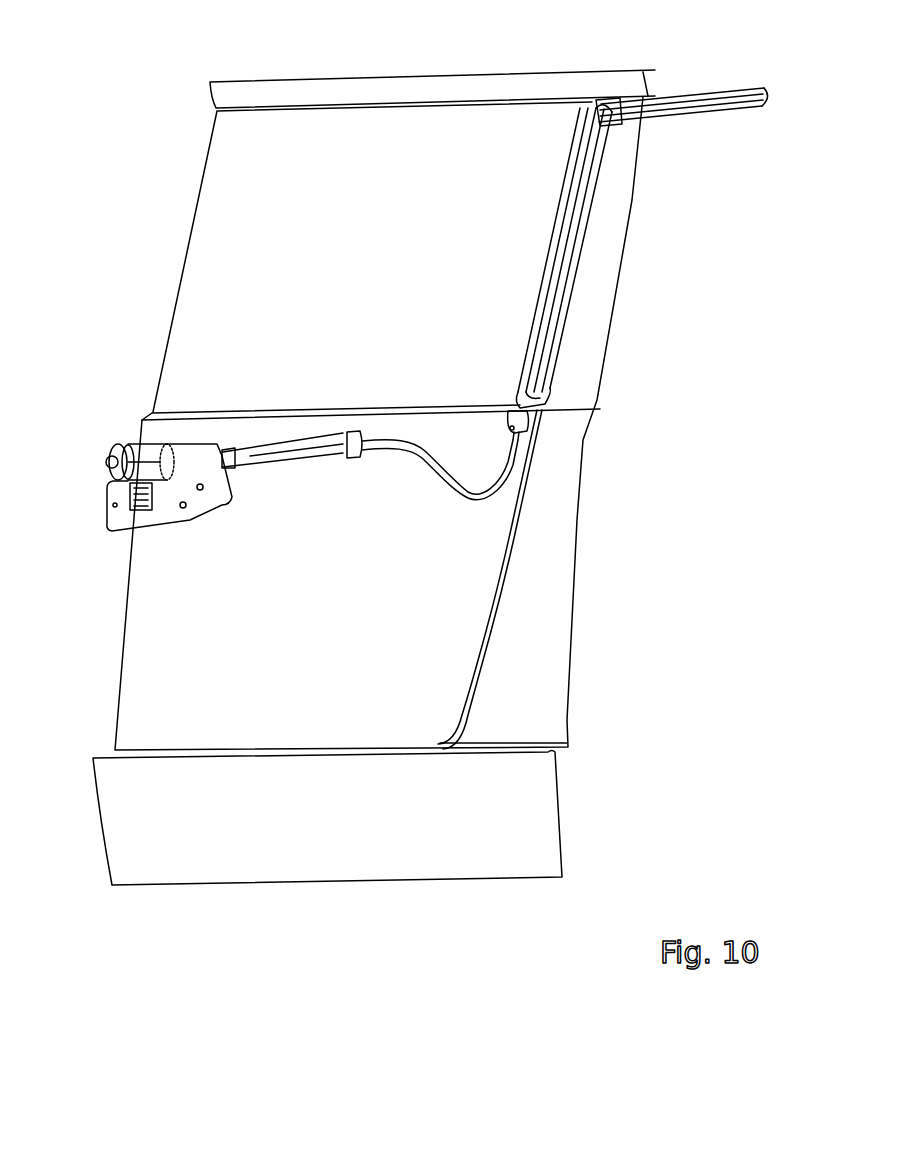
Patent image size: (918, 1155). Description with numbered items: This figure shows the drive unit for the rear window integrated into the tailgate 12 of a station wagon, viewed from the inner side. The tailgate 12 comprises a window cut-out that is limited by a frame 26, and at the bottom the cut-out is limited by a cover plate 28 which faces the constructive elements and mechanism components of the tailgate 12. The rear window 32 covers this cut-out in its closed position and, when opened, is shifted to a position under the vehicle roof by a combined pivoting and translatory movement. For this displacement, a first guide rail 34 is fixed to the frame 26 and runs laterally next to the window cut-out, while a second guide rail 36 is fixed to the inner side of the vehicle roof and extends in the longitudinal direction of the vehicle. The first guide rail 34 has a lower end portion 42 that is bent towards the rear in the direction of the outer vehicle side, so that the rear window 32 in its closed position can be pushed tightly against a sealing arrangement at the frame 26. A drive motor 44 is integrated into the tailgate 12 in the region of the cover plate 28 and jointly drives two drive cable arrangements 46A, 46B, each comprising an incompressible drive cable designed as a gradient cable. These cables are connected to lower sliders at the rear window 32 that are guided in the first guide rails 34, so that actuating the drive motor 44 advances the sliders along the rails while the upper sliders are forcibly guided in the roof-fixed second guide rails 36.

The tailgate 12 is at (490, 635).
The frame 26 is at (535, 401).
The cover plate 28 is at (333, 705).
The rear window 32 is at (388, 251).
The first guide rail 34 is at (573, 210).
The second guide rail 36 is at (700, 95).
The lower end portion 42 is at (528, 385).
The drive motor 44 is at (163, 507).
The drive cable arrangement 46A is at (305, 465).
The drive cable arrangement 46B is at (250, 457).